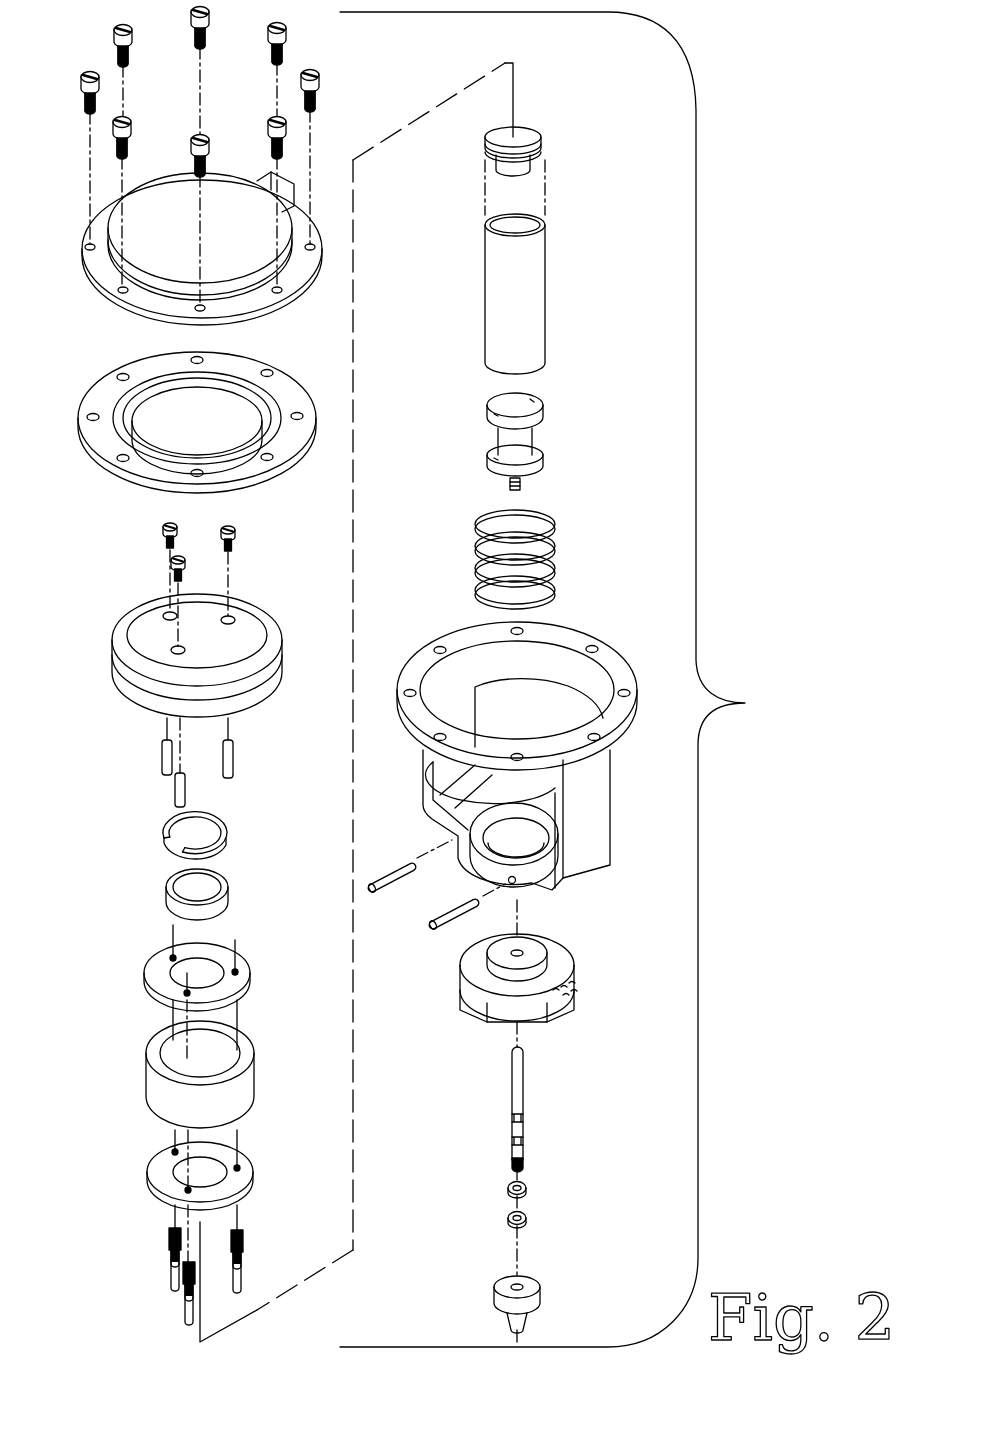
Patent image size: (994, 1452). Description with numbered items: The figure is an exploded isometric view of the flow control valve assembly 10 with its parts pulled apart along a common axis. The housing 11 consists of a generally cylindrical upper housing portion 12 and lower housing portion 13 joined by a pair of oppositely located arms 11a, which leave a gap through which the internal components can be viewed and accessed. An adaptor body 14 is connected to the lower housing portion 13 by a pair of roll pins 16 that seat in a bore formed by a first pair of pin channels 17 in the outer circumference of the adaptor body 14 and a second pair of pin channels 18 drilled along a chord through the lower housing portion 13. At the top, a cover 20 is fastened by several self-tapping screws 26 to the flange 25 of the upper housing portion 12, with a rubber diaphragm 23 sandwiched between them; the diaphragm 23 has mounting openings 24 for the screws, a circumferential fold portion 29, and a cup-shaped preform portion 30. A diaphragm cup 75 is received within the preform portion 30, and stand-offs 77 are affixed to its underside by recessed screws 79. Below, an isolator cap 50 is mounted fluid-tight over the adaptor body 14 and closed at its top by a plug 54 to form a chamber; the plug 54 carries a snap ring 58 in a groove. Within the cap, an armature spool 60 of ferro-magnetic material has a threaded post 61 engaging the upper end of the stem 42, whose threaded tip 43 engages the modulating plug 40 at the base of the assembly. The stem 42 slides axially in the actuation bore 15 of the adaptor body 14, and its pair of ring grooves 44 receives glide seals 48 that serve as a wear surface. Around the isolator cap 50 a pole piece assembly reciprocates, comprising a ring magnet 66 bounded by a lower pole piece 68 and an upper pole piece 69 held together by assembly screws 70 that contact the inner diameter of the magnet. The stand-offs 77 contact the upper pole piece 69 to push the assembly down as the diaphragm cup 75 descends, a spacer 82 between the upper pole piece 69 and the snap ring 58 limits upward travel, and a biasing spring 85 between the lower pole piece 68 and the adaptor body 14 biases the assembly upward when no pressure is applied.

The flow control valve assembly 10 is at (766, 704).
The housing 11 is at (531, 782).
The arms 11a is at (423, 757).
The upper housing portion 12 is at (468, 779).
The lower housing portion 13 is at (525, 893).
The adaptor body 14 is at (545, 1018).
The actuation bore 15 is at (490, 960).
The roll pins 16 is at (433, 922).
The pin channels 17 is at (560, 1000).
The pin channels 18 is at (506, 879).
The cover 20 is at (258, 303).
The diaphragm 23 is at (282, 380).
The mounting openings 24 is at (300, 419).
The flange 25 is at (612, 662).
The self-tapping screws 26 is at (287, 29).
The circumferential fold portion 29 is at (122, 396).
The preform portion 30 is at (212, 409).
The modulating plug 40 is at (494, 1293).
The stem 42 is at (513, 1071).
The threaded tip 43 is at (514, 1166).
The ring grooves 44 is at (527, 1117).
The glide seals 48 is at (506, 1188).
The isolator cap 50 is at (540, 272).
The plug 54 is at (540, 137).
The snap ring 58 is at (225, 822).
The armature spool 60 is at (533, 412).
The threaded post 61 is at (522, 486).
The ring magnet 66 is at (248, 1080).
The lower pole piece 68 is at (250, 1170).
The upper pole piece 69 is at (245, 970).
The assembly screws 70 is at (172, 1262).
The diaphragm cup 75 is at (268, 645).
The stand-offs 77 is at (175, 798).
The recessed screws 79 is at (176, 562).
The spacer 82 is at (170, 886).
The biasing spring 85 is at (553, 575).